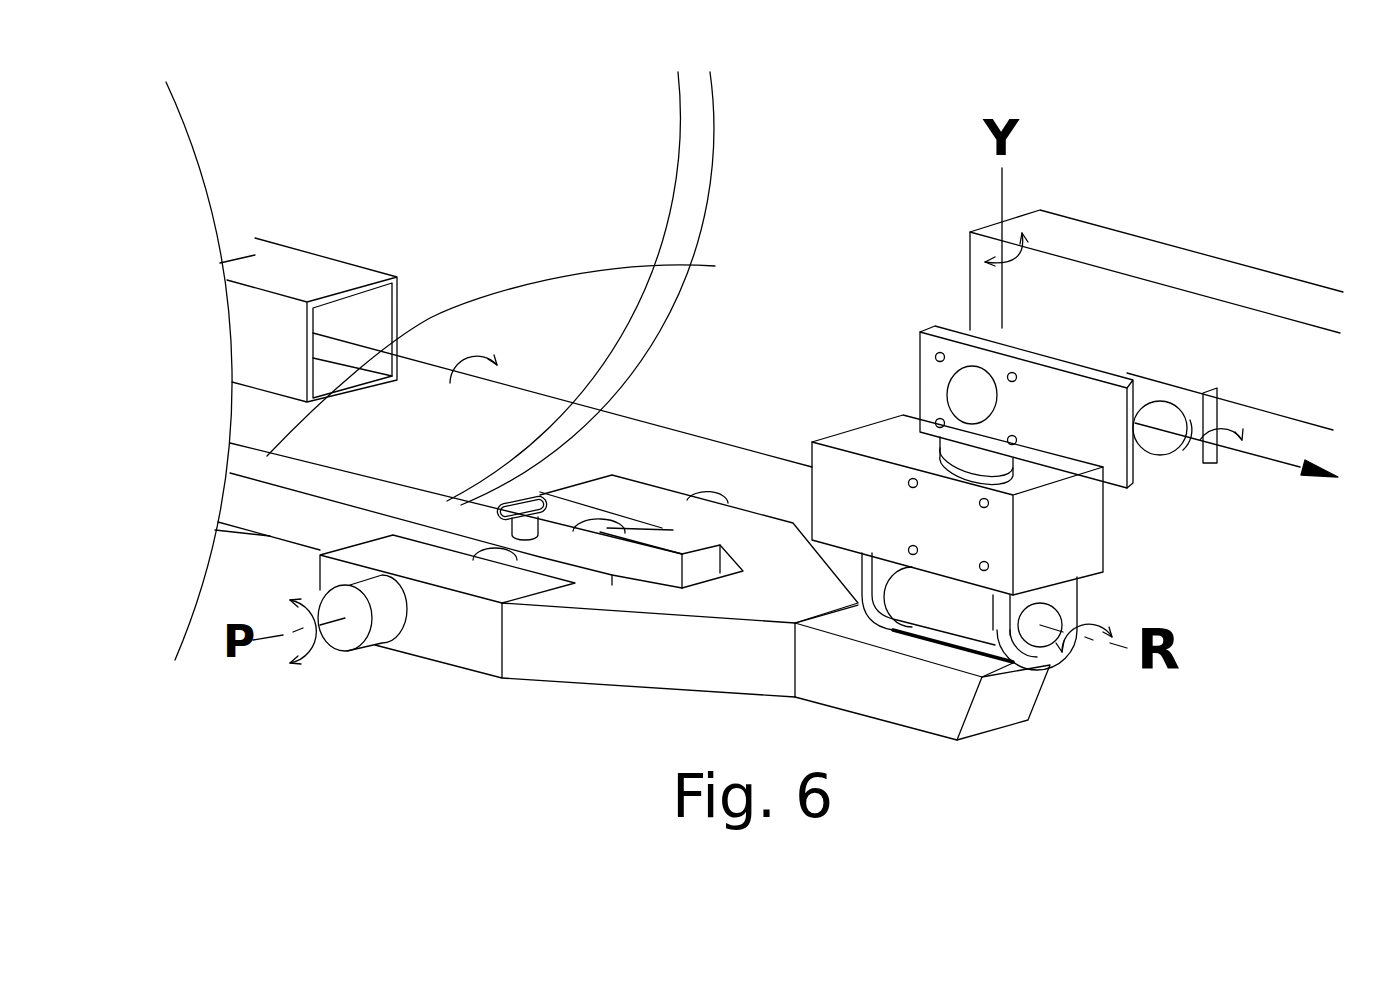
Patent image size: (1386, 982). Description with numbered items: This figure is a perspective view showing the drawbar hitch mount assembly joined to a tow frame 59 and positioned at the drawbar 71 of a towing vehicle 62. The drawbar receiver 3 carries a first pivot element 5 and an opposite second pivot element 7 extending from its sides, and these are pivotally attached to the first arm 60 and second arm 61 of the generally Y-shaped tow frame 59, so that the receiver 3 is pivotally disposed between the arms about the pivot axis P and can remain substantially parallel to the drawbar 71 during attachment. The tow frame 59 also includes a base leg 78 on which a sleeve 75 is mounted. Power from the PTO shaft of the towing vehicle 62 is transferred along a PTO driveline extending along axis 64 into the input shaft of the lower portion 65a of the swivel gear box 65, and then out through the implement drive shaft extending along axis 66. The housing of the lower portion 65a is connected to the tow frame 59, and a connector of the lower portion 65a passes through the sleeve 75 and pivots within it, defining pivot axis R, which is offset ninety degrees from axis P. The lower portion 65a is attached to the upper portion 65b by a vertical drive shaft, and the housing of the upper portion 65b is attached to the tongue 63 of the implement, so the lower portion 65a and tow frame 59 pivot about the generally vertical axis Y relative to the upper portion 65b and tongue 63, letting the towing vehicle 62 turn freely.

The drawbar receiver 3 is at (562, 538).
The first pivot element 5 is at (517, 561).
The second pivot element 7 is at (740, 452).
The tow frame 59 is at (718, 693).
The first arm 60 is at (453, 643).
The second arm 61 is at (648, 498).
The towing vehicle 62 is at (703, 332).
The tongue 63 is at (1140, 237).
The axis 64 is at (777, 455).
The swivel gear box 65 is at (873, 367).
The lower portion 65a is at (1105, 556).
The upper portion 65b is at (918, 360).
The axis 66 is at (1227, 447).
The drawbar 71 is at (460, 371).
The sleeve 75 is at (962, 740).
The base leg 78 is at (817, 705).